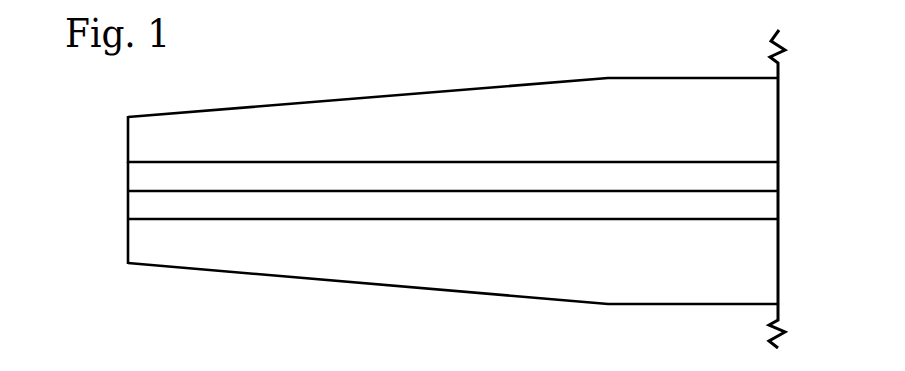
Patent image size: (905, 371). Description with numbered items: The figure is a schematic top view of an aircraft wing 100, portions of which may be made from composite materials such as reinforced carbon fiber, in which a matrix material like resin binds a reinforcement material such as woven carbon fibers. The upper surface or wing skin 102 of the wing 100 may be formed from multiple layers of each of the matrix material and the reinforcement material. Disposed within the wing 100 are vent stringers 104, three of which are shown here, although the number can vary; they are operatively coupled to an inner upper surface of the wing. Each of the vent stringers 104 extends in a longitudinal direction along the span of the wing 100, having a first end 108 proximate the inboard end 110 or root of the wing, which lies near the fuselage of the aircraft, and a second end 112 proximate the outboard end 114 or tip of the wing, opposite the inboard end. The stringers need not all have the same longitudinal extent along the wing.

The aircraft wing 100 is at (134, 94).
The wing skin 102 is at (616, 133).
The vent stringers 104 is at (442, 218).
The first end 108 is at (777, 161).
The inboard end 110 is at (780, 203).
The second end 112 is at (130, 162).
The outboard end 114 is at (127, 205).